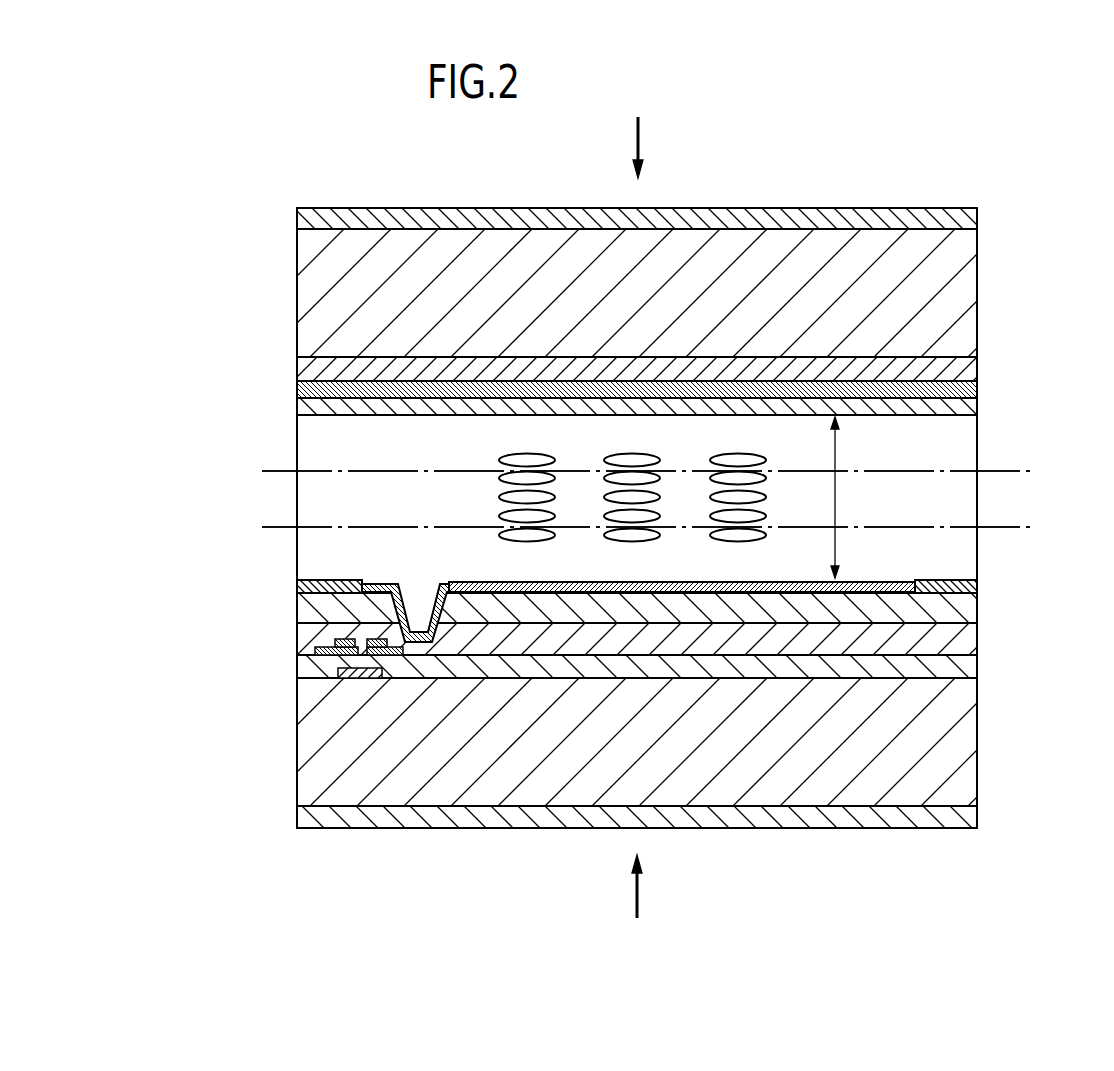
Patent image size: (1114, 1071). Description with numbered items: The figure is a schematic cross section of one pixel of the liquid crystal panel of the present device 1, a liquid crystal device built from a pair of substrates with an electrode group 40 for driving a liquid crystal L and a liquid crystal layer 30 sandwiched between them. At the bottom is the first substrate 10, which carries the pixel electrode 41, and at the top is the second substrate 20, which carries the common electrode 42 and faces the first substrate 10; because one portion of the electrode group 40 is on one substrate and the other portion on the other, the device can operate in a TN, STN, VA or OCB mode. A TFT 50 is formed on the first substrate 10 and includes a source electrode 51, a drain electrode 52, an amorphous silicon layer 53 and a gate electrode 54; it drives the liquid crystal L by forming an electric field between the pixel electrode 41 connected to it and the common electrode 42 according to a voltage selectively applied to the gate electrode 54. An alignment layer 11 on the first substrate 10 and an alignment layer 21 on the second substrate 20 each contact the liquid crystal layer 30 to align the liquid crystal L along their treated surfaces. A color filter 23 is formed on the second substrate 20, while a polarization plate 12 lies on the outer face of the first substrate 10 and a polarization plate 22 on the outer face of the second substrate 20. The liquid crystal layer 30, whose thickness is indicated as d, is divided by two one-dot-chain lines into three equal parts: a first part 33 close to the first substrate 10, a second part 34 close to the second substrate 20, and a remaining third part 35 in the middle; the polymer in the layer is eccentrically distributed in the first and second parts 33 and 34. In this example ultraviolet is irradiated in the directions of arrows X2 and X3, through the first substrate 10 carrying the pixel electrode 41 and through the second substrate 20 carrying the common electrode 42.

The liquid crystal device 1 is at (787, 152).
The first substrate 10 is at (962, 748).
The alignment layer 11 is at (317, 587).
The polarization plate 12 is at (300, 814).
The second substrate 20 is at (962, 297).
The alignment layer 21 is at (300, 408).
The polarization plate 22 is at (300, 213).
The color filter 23 is at (300, 367).
The liquid crystal layer 30 is at (608, 498).
The first part 33 is at (633, 554).
The second part 34 is at (288, 415).
The third part 35 is at (288, 473).
The electrode group 40 is at (636, 478).
The pixel electrode 41 is at (915, 578).
The common electrode 42 is at (972, 388).
The TFT 50 is at (579, 660).
The source electrode 51 is at (338, 641).
The drain electrode 52 is at (355, 606).
The amorphous silicon layer 53 is at (362, 658).
The gate electrode 54 is at (352, 676).
The liquid crystal L is at (520, 460).
The thickness of the liquid crystal layer d is at (841, 497).
The arrow X2 is at (640, 890).
The arrow X3 is at (640, 142).